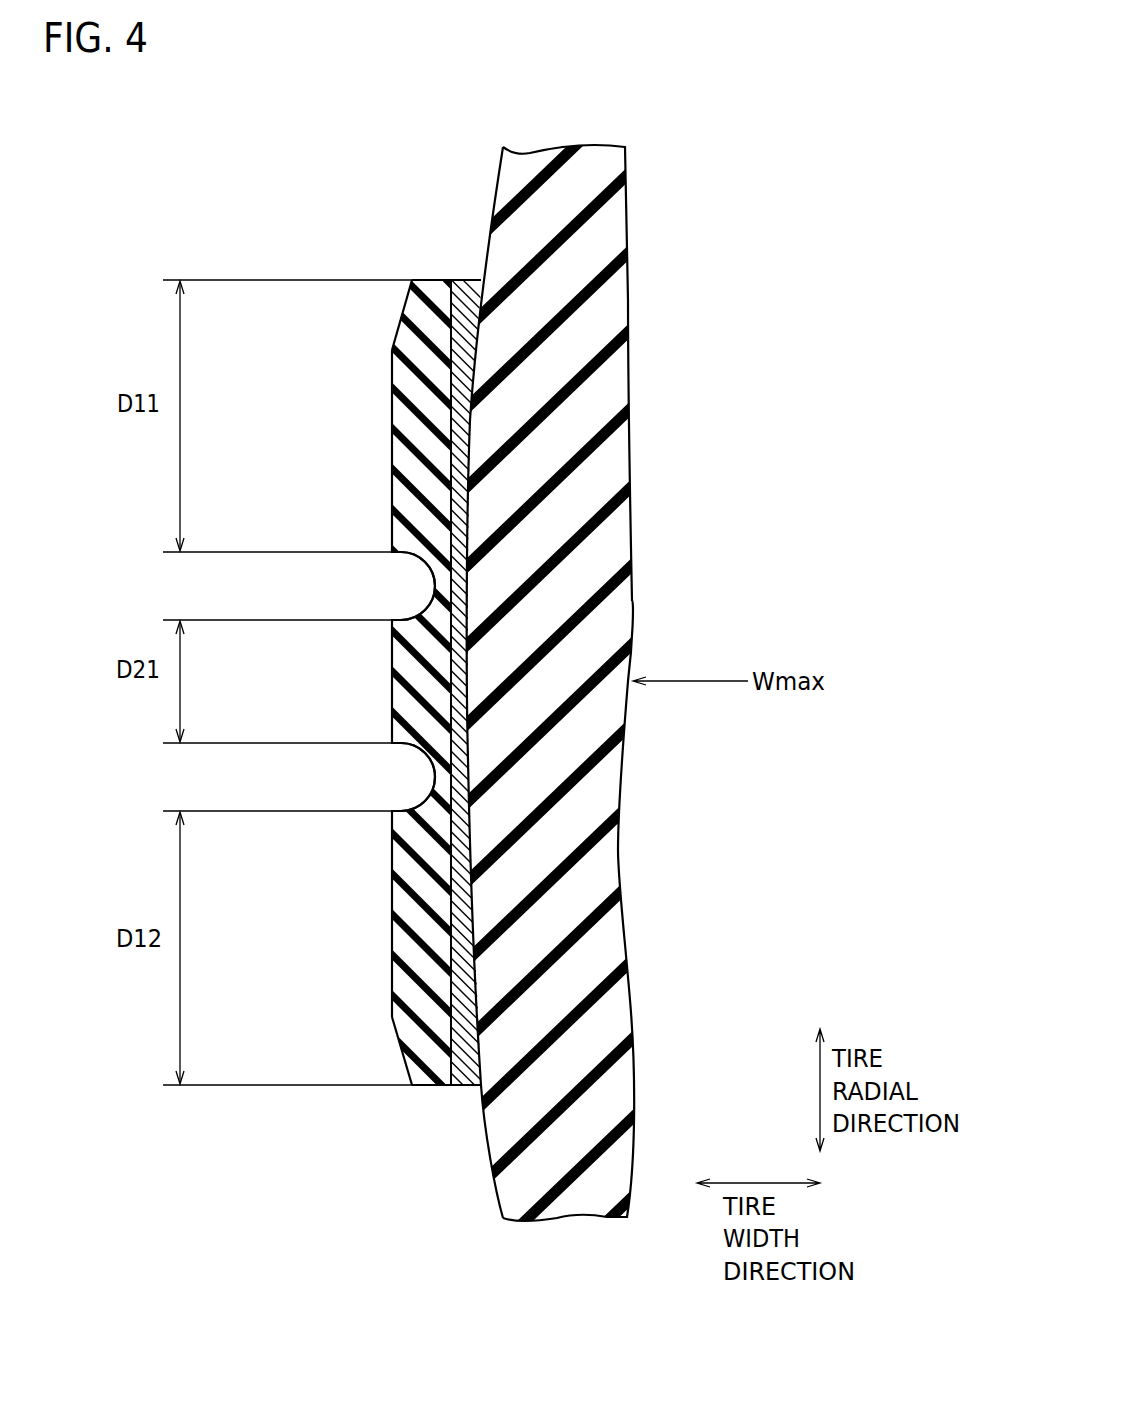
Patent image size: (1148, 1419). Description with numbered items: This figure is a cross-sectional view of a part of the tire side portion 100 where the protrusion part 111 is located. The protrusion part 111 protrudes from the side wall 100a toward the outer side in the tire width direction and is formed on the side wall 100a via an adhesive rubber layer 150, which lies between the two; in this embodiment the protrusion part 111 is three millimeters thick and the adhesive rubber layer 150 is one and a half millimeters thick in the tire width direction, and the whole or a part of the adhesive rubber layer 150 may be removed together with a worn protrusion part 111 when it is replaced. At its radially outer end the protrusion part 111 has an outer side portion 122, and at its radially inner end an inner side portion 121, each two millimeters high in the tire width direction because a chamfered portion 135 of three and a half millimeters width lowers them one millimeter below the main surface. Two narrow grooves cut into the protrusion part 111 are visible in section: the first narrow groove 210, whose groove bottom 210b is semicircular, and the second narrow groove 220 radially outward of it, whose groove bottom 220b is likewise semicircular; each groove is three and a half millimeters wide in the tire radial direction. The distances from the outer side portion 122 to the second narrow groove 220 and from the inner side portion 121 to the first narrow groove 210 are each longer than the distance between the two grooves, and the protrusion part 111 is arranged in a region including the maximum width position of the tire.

The tire side portion 100 is at (495, 500).
The side wall 100a is at (486, 1164).
The protrusion part 111 is at (494, 653).
The inner side portion 121 is at (431, 1086).
The outer side portion 122 is at (433, 280).
The chamfered portion 135 is at (404, 308).
The adhesive rubber layer 150 is at (470, 893).
The first narrow groove 210 is at (507, 777).
The groove bottom of first narrow groove 210b is at (437, 767).
The second narrow groove 220 is at (507, 586).
The groove bottom of second narrow groove 220b is at (437, 577).